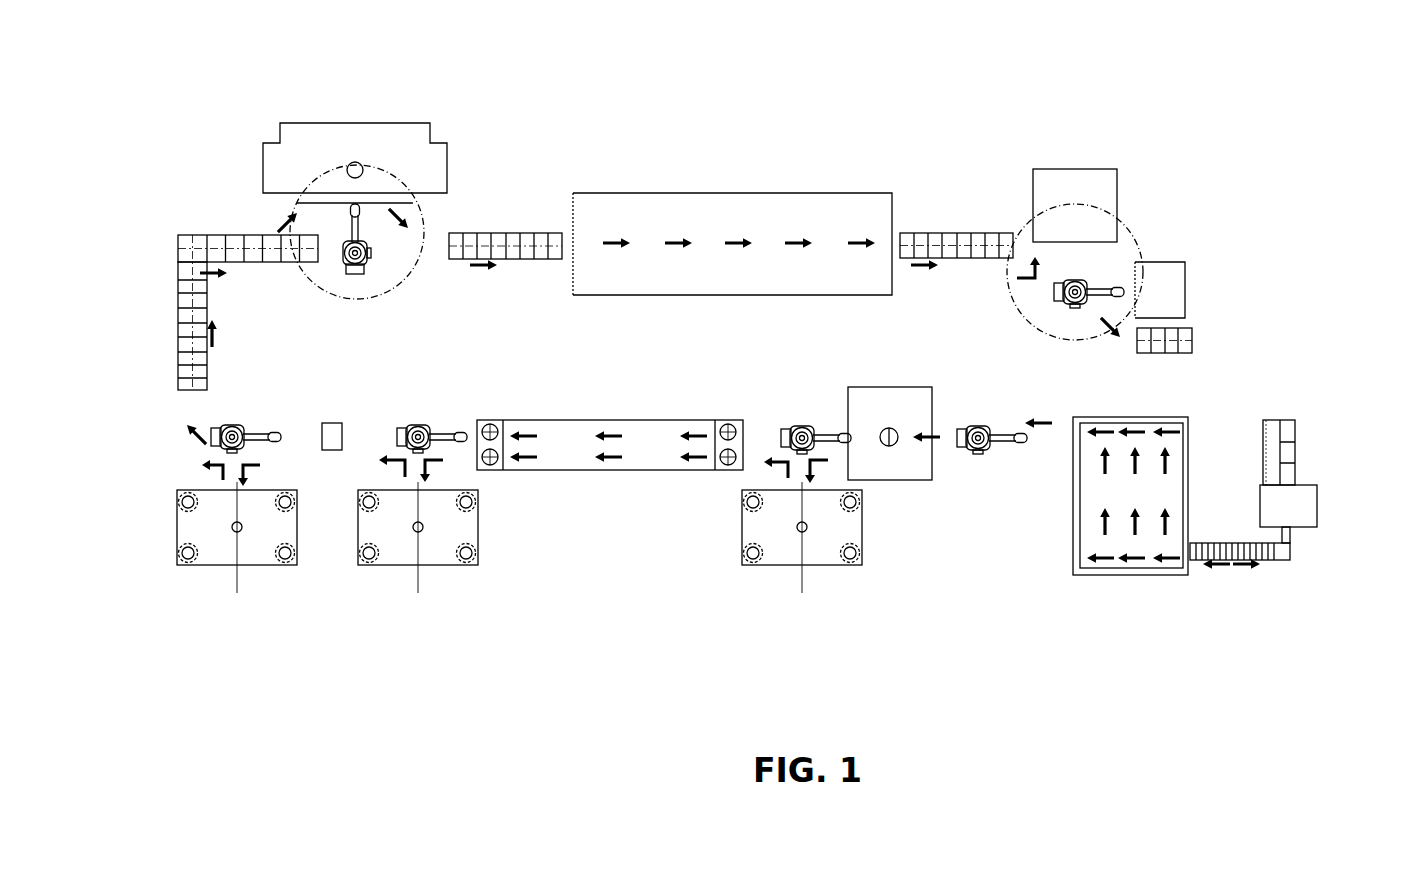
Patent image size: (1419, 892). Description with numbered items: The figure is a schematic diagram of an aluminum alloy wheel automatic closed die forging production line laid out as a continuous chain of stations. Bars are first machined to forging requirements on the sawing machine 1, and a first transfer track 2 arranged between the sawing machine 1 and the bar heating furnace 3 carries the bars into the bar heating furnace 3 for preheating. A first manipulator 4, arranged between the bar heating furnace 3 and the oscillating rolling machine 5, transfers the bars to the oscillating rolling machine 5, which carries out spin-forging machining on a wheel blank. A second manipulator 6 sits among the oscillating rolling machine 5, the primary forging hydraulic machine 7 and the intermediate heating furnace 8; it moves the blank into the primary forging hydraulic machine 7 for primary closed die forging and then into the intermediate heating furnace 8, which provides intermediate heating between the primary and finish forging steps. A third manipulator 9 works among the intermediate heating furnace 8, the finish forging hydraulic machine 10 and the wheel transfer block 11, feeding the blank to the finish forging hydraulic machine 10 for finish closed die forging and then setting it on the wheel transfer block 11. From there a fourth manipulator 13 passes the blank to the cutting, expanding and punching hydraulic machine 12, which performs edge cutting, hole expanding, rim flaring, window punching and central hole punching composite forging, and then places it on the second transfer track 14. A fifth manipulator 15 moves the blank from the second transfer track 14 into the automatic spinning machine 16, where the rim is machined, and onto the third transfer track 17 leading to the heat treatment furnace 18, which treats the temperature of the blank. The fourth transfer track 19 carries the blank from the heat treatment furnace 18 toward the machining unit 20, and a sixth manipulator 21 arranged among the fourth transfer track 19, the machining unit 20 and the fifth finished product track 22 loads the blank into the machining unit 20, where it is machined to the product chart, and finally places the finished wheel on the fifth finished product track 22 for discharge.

The sawing machine 1 is at (1297, 500).
The first transfer track 2 is at (1227, 550).
The bar heating furnace 3 is at (1152, 417).
The first manipulator 4 is at (983, 430).
The oscillating rolling machine 5 is at (888, 398).
The second manipulator 6 is at (798, 430).
The primary forging hydraulic machine 7 is at (813, 543).
The intermediate heating furnace 8 is at (570, 435).
The third manipulator 9 is at (415, 425).
The finish forging hydraulic machine 10 is at (423, 553).
The wheel transfer block 11 is at (328, 430).
The cutting, expanding and punching hydraulic machine 12 is at (240, 553).
The fourth manipulator 13 is at (232, 426).
The second transfer track 14 is at (190, 253).
The fifth manipulator 15 is at (353, 235).
The automatic spinning machine 16 is at (293, 145).
The third transfer track 17 is at (530, 243).
The heat treatment furnace 18 is at (750, 212).
The fourth transfer track 19 is at (933, 240).
The machining unit 20 is at (1105, 187).
The sixth manipulator 21 is at (1083, 283).
The fifth finished product track 22 is at (1163, 340).